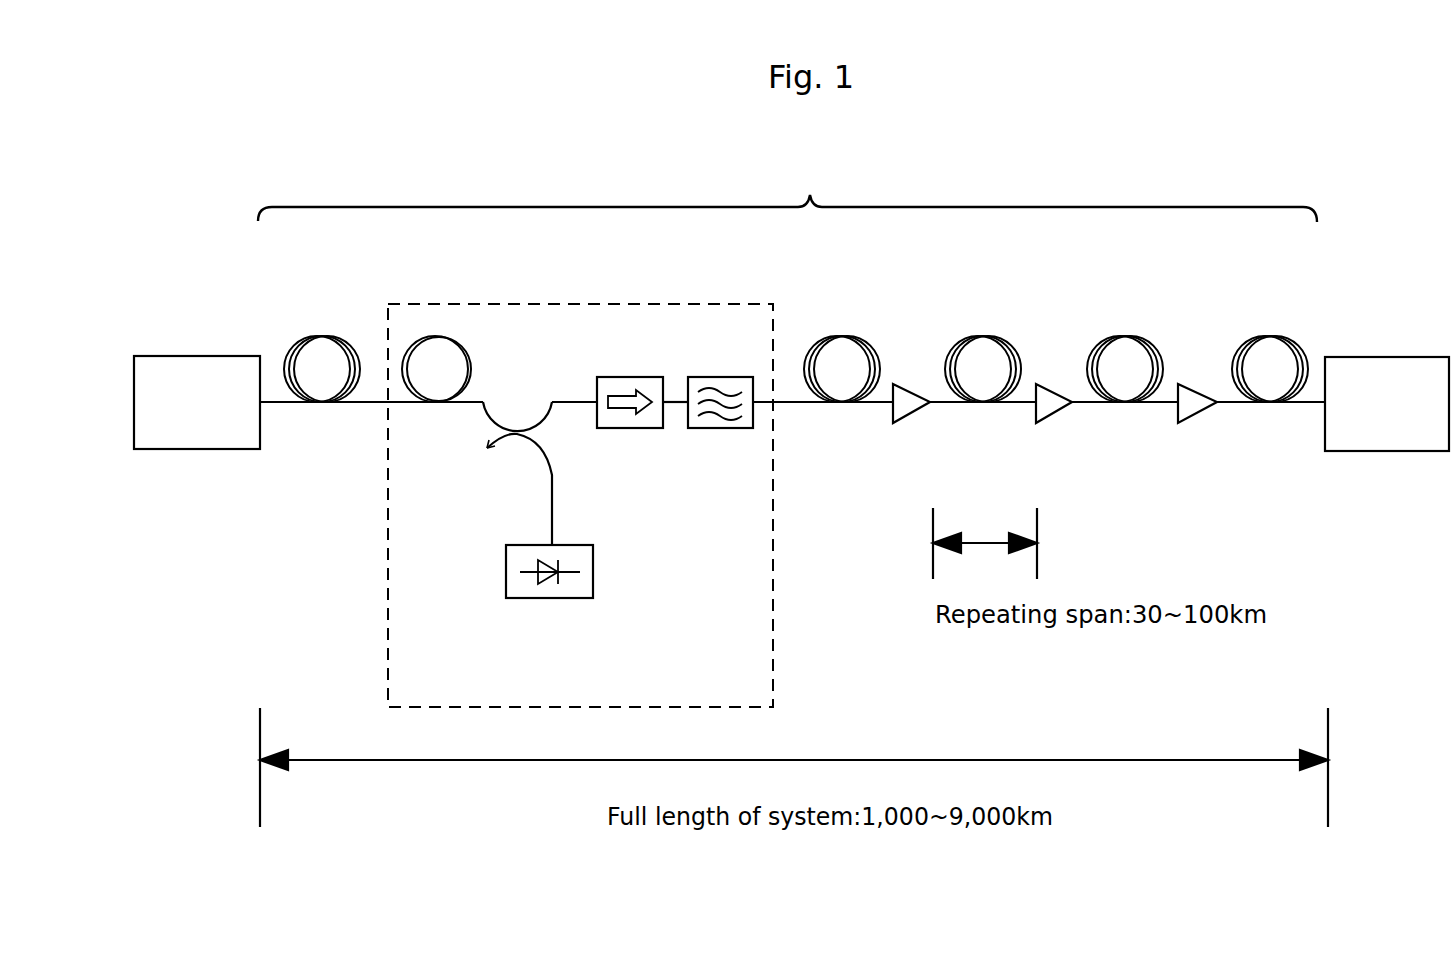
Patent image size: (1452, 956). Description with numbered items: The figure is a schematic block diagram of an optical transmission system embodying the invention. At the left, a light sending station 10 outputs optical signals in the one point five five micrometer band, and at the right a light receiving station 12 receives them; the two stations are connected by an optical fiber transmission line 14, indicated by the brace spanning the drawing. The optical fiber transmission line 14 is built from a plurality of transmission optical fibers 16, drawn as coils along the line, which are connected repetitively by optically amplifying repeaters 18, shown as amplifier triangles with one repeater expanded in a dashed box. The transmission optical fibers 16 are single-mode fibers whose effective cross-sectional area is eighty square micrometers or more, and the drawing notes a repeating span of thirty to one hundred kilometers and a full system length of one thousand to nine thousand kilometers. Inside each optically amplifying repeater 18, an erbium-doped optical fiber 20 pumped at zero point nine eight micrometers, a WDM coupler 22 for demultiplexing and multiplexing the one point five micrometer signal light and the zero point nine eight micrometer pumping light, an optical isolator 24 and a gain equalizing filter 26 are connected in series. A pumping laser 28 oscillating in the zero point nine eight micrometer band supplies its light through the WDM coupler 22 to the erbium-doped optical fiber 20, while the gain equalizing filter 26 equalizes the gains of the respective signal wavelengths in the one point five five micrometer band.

The light sending station 10 is at (222, 367).
The light receiving station 12 is at (1405, 365).
The optical fiber transmission line 14 is at (787, 190).
The transmission optical fiber 16 is at (322, 354).
The optically amplifying repeater 18 is at (510, 303).
The erbium-doped optical fiber 20 is at (435, 386).
The WDM coupler 22 is at (520, 412).
The optical isolator 24 is at (633, 421).
The gain equalizing filter 26 is at (720, 421).
The pumping laser 28 is at (595, 578).